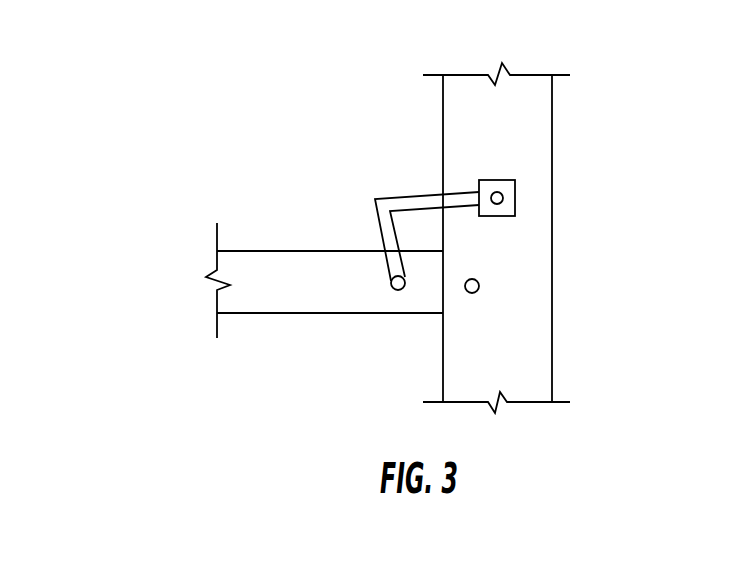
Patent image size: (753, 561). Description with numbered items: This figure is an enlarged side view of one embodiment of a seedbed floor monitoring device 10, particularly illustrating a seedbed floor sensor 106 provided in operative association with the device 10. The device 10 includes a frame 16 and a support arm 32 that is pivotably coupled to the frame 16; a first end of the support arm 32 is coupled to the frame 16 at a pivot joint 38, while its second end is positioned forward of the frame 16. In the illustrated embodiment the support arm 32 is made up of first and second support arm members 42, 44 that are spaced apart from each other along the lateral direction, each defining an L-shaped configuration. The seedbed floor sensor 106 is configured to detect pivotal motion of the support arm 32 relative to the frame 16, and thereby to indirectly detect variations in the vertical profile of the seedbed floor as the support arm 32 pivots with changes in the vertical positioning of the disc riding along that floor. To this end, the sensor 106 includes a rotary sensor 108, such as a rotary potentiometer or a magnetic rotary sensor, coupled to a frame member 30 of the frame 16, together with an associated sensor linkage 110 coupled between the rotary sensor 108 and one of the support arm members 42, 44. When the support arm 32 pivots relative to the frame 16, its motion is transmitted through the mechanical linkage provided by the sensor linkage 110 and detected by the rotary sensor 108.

The seedbed floor monitoring device 10 is at (122, 148).
The frame 16 is at (552, 243).
The frame member 30 is at (552, 133).
The support arm 32 is at (247, 315).
The pivot joint 38 is at (479, 286).
The first support arm member 42 is at (335, 313).
The second support arm member 44 is at (218, 280).
The seedbed floor sensor 106 is at (352, 163).
The rotary sensor 108 is at (515, 199).
The sensor linkage 110 is at (415, 195).